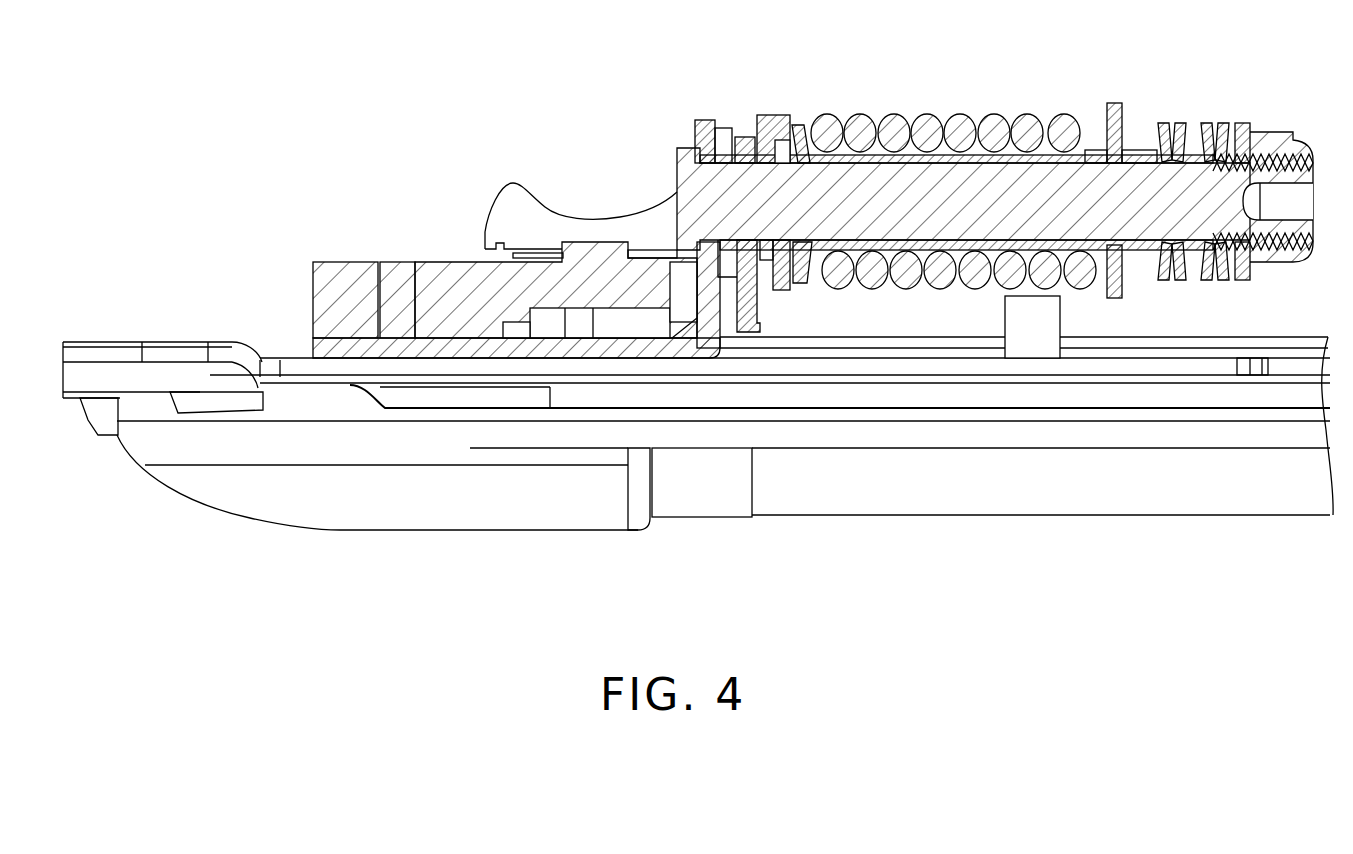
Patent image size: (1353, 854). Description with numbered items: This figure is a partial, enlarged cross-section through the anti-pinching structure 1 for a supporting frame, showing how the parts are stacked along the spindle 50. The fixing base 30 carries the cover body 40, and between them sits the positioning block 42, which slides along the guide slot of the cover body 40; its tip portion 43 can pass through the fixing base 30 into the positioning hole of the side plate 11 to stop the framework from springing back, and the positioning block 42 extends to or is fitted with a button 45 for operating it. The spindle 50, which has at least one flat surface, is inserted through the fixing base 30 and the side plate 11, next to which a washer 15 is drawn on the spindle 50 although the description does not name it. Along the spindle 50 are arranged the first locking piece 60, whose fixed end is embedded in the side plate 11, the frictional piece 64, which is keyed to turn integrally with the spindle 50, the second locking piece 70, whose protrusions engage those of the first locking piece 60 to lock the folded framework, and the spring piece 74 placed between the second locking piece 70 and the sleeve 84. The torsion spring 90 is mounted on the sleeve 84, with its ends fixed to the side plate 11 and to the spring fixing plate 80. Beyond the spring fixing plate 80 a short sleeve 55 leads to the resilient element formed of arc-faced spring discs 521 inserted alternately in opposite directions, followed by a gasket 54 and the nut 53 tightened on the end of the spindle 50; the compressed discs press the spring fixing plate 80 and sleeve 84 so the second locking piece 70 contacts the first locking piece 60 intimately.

The connector assembly 1 is at (1001, 70).
The side plate 11 is at (747, 135).
The washer 15 is at (722, 125).
The fixing base 30 is at (590, 355).
The cover body 40 is at (365, 262).
The positioning block 42 is at (635, 325).
The tip portion 43 is at (722, 330).
The button 45 is at (503, 200).
The spindle 50 is at (705, 188).
The nut 53 is at (1278, 140).
The gasket 54 is at (1243, 280).
The short sleeve 55 is at (1133, 152).
The first locking piece 60 is at (764, 113).
The frictional piece 64 is at (785, 285).
The second locking piece 70 is at (797, 125).
The spring piece 74 is at (808, 290).
The spring fixing plate 80 is at (1115, 103).
The sleeve 84 is at (1097, 150).
The torsion spring 90 is at (895, 115).
The spring discs 521 is at (1205, 122).